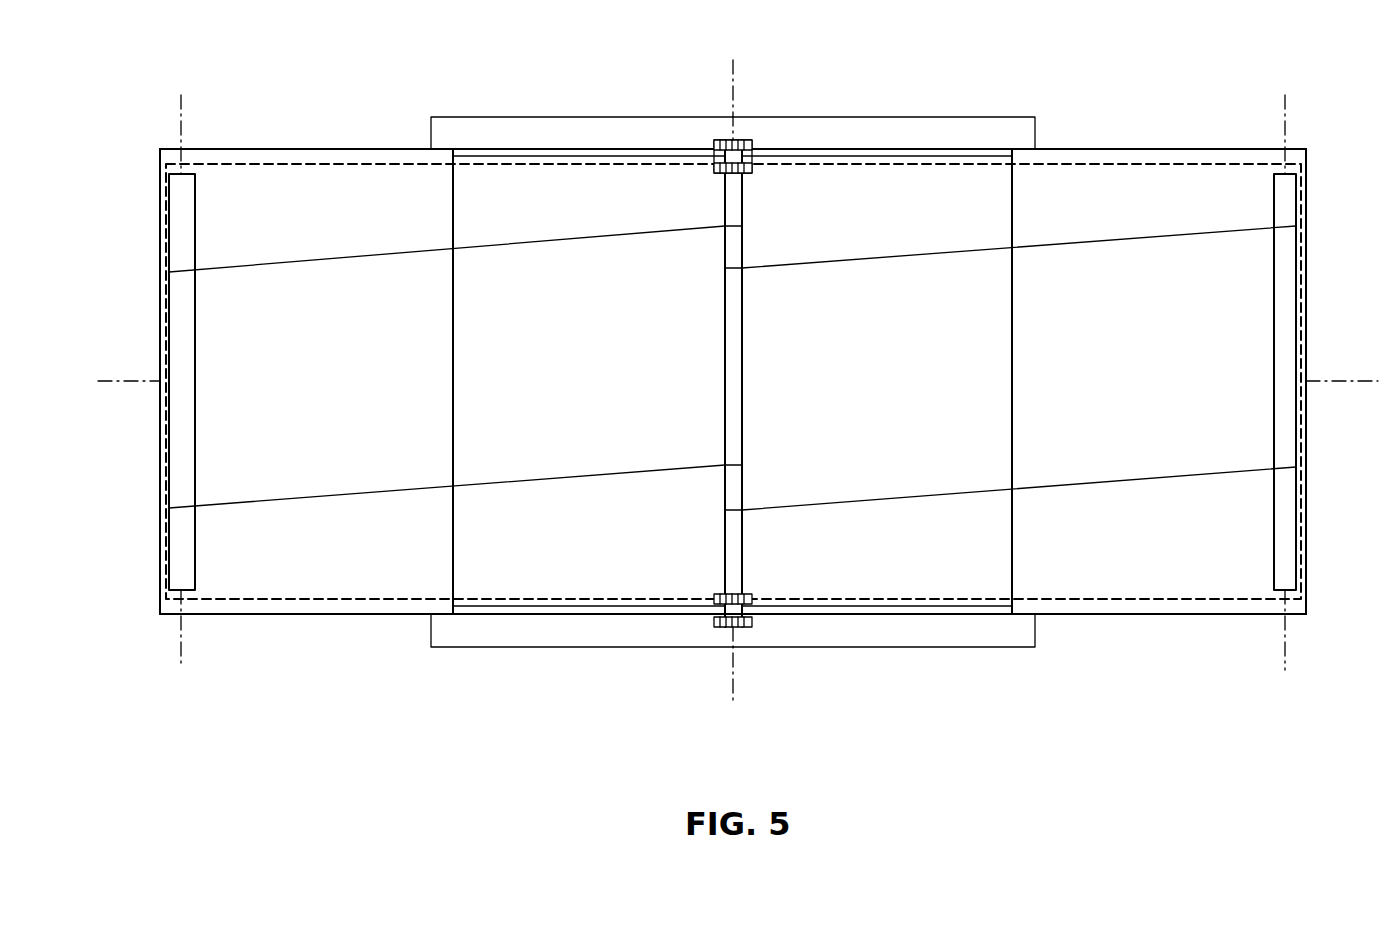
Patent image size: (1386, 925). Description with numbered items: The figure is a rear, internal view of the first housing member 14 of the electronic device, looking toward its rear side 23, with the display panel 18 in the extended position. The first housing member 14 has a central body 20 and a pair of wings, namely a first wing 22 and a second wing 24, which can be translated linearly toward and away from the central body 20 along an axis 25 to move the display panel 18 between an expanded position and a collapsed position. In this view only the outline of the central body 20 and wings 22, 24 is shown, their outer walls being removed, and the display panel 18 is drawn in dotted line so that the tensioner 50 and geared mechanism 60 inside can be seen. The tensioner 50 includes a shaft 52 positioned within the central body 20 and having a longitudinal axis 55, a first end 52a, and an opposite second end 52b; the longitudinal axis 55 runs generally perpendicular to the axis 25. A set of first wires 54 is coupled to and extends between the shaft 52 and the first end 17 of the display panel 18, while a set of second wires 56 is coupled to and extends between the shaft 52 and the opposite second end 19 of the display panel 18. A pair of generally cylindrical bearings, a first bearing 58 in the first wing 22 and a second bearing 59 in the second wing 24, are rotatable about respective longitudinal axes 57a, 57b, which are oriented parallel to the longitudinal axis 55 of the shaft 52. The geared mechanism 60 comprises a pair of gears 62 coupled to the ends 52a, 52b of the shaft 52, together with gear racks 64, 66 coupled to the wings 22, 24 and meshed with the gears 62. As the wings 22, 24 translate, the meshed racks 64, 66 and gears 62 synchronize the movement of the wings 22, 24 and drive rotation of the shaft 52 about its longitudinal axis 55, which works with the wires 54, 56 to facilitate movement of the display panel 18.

The first housing member 14 is at (482, 114).
The first end of display panel 17 is at (1302, 429).
The display panel 18 is at (403, 160).
The second end of display panel 19 is at (165, 410).
The central body 20 is at (860, 117).
The first wing 22 is at (1085, 148).
The rear side 23 is at (1143, 621).
The second wing 24 is at (262, 148).
The axis 25 is at (133, 380).
The tensioner 50 is at (720, 348).
The shaft 52 is at (745, 357).
The first end of shaft 52a is at (745, 175).
The second end of shaft 52b is at (745, 587).
The first wires 54 is at (920, 254).
The longitudinal axis of shaft 55 is at (733, 668).
The second wires 56 is at (540, 243).
The longitudinal axis of first bearing 57a is at (1283, 103).
The longitudinal axis of second bearing 57b is at (180, 103).
The first bearing 58 is at (1272, 293).
The second bearing 59 is at (197, 222).
The geared mechanism 60 is at (707, 125).
The gears 62 is at (745, 138).
The gear rack 64 is at (577, 148).
The gear rack 66 is at (945, 148).